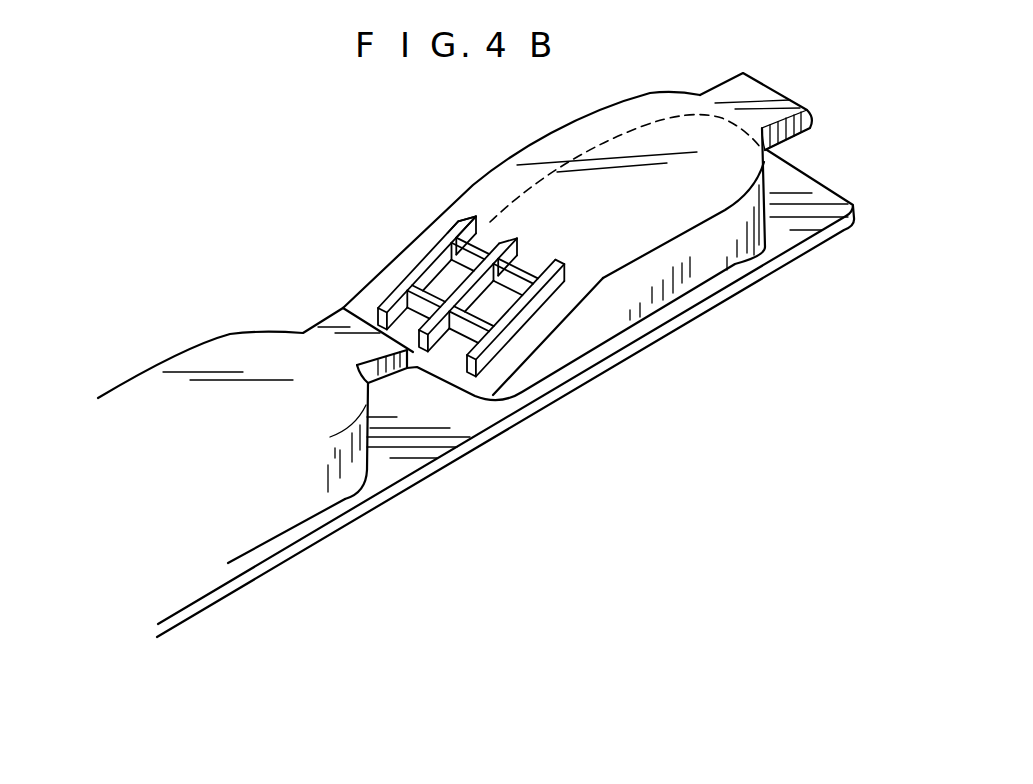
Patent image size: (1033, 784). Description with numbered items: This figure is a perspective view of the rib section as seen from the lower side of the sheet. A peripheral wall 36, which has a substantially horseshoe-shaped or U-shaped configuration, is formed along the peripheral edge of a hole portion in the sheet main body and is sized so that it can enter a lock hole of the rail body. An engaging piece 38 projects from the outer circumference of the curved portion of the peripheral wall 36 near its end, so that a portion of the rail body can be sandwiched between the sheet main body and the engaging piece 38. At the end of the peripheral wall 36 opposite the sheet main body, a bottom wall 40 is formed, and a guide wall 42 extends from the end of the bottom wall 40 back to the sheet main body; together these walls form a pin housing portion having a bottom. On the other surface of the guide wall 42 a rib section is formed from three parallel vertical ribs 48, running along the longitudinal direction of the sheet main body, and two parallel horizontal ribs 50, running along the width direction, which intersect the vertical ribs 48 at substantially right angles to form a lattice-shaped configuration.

The peripheral wall 36 is at (698, 263).
The engaging piece 38 is at (738, 90).
The bottom wall 40 is at (571, 153).
The guide wall 42 is at (484, 228).
The vertical ribs 48 is at (510, 330).
The horizontal ribs 50 is at (417, 277).